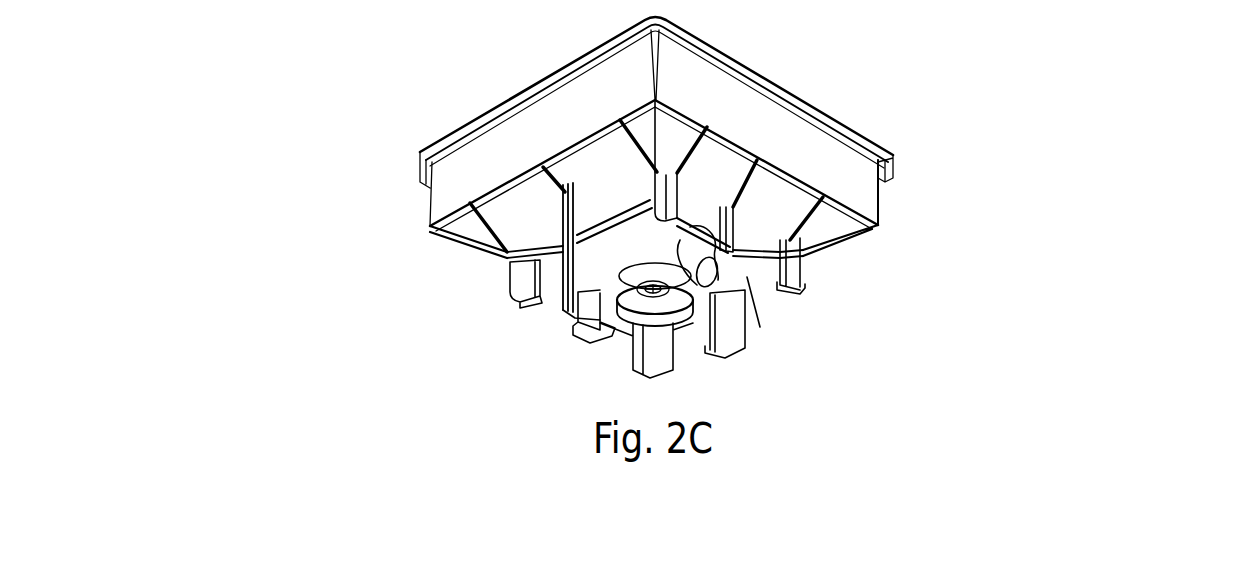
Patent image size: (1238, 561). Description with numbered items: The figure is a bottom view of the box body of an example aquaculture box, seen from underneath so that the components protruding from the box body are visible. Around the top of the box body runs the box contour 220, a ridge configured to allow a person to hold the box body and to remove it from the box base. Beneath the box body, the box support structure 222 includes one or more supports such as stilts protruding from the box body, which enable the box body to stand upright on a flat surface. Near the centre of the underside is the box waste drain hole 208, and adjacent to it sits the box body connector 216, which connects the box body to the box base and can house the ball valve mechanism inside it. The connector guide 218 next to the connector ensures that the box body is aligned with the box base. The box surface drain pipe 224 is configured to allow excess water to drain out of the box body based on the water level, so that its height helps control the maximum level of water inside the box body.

The box waste drain hole 208 is at (618, 272).
The box body connector 216 is at (563, 278).
The connector guide 218 is at (575, 318).
The box contour 220 is at (893, 157).
The box support structure 222 is at (808, 254).
The box surface drain pipe 224 is at (775, 277).